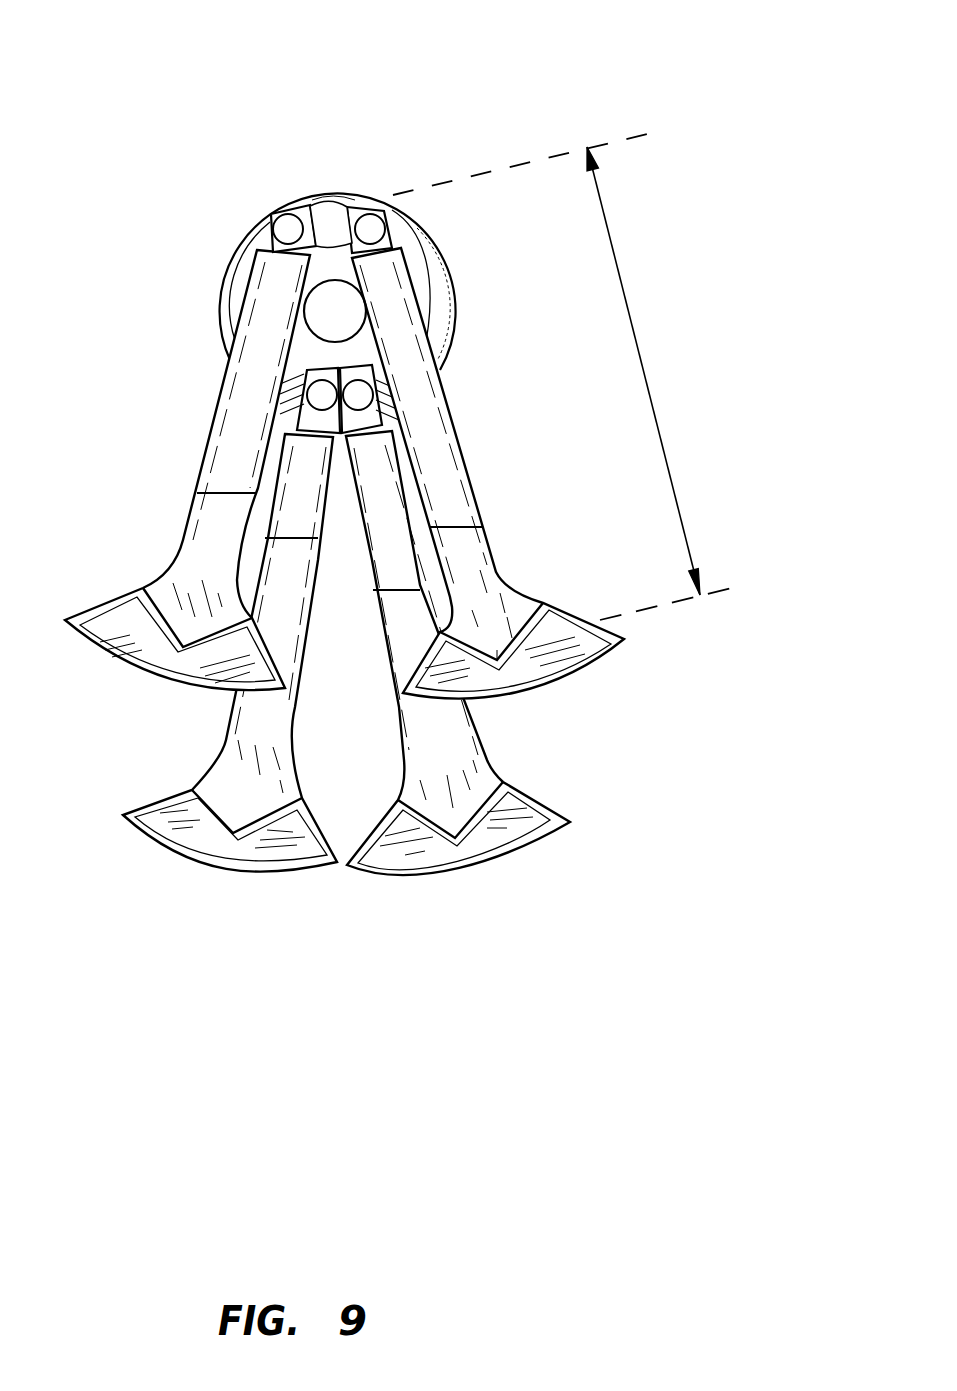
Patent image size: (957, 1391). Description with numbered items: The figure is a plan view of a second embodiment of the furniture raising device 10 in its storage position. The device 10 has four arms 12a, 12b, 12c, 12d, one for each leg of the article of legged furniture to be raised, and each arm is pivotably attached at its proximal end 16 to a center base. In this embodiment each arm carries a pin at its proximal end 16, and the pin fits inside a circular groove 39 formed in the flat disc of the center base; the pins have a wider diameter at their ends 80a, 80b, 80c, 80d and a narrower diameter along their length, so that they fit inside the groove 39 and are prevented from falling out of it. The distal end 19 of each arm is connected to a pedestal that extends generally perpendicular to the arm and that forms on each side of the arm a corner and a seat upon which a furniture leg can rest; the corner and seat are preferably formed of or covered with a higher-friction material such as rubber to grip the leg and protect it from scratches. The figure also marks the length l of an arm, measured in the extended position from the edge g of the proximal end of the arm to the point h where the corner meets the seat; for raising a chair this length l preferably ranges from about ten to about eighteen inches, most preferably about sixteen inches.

The furniture raising device 10 is at (335, 100).
The arm 12a is at (488, 473).
The arm 12b is at (458, 653).
The arm 12c is at (230, 653).
The arm 12d is at (187, 470).
The proximal end 16 is at (398, 212).
The distal end 19 is at (550, 606).
The groove 39 is at (320, 217).
The pin end 80a is at (372, 229).
The pin end 80b is at (360, 395).
The pin end 80c is at (322, 395).
The pin end 80d is at (284, 228).
The edge of the proximal end g is at (353, 190).
The point where the corner meets the seat h is at (498, 640).
The length of the arm l is at (678, 396).